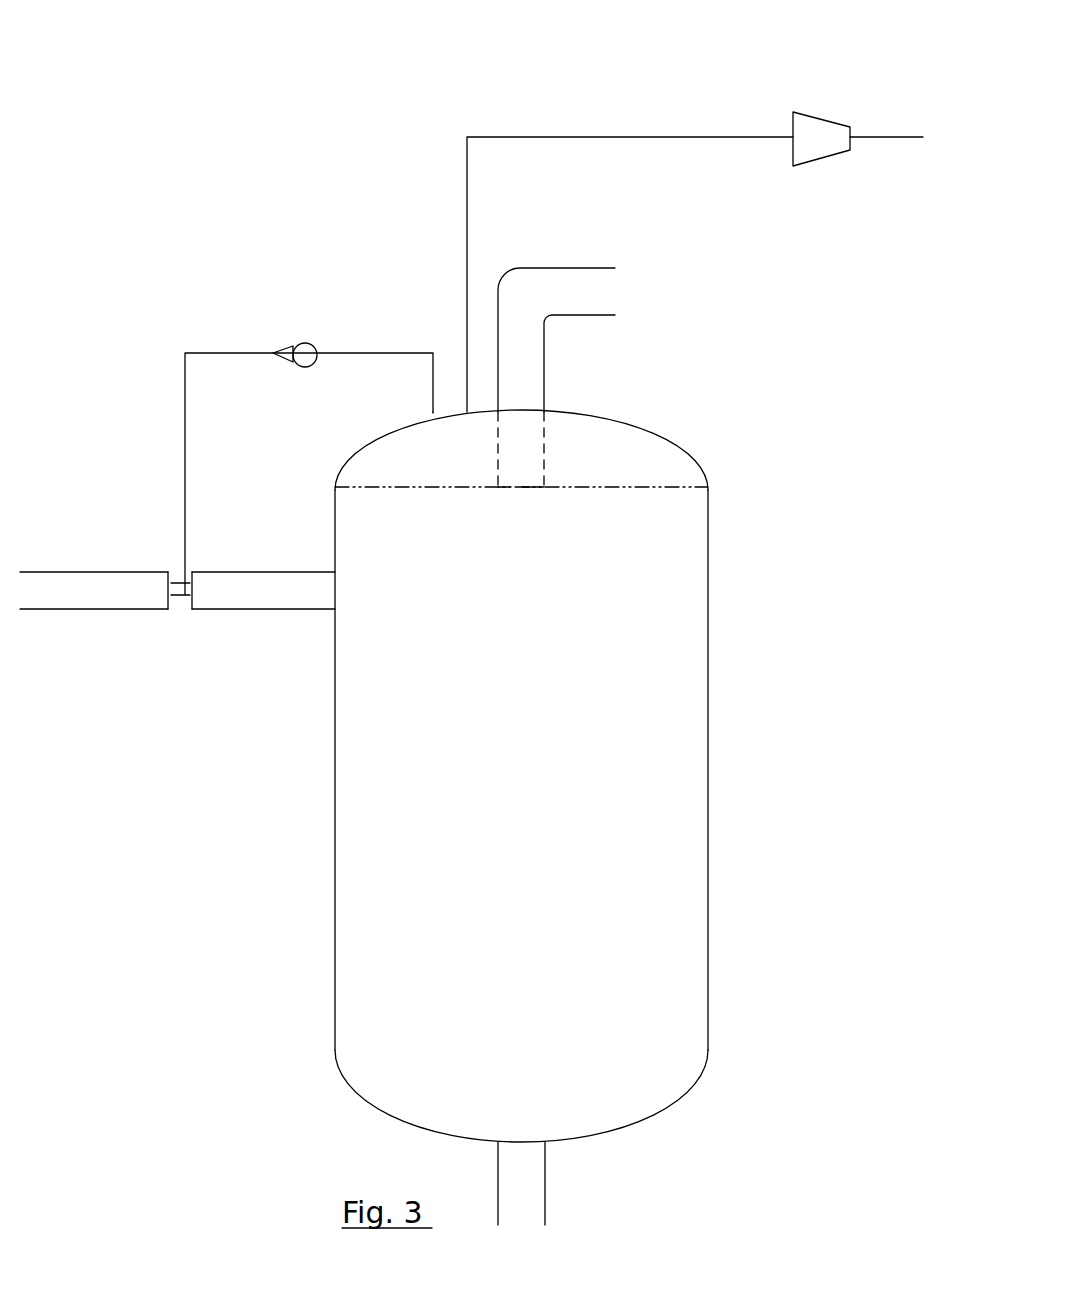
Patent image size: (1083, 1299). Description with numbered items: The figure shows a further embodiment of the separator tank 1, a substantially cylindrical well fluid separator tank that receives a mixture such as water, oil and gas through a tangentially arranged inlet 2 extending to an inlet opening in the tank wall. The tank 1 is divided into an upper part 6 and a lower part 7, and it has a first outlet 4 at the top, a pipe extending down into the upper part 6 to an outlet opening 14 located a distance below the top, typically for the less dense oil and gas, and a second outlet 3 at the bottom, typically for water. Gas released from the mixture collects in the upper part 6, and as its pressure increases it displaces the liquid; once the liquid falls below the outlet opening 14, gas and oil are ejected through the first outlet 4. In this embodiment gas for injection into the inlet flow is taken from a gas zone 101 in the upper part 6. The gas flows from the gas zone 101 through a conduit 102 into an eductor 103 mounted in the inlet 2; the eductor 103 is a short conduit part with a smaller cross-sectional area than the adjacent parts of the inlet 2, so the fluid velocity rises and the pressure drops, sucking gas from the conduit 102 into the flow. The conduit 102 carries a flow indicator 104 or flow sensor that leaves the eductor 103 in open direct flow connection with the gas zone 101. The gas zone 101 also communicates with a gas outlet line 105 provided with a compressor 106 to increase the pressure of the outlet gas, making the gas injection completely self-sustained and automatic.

The separator tank 1 is at (740, 588).
The inlet 2 is at (120, 590).
The second outlet 3 is at (535, 1207).
The first outlet 4 is at (573, 288).
The upper part 6 is at (592, 530).
The lower part 7 is at (670, 1032).
The outlet opening 14 is at (515, 492).
The gas zone 101 is at (452, 452).
The conduit 102 is at (215, 353).
The eductor 103 is at (173, 608).
The flow indicator 104 is at (307, 353).
The gas outlet line 105 is at (545, 137).
The compressor 106 is at (818, 142).